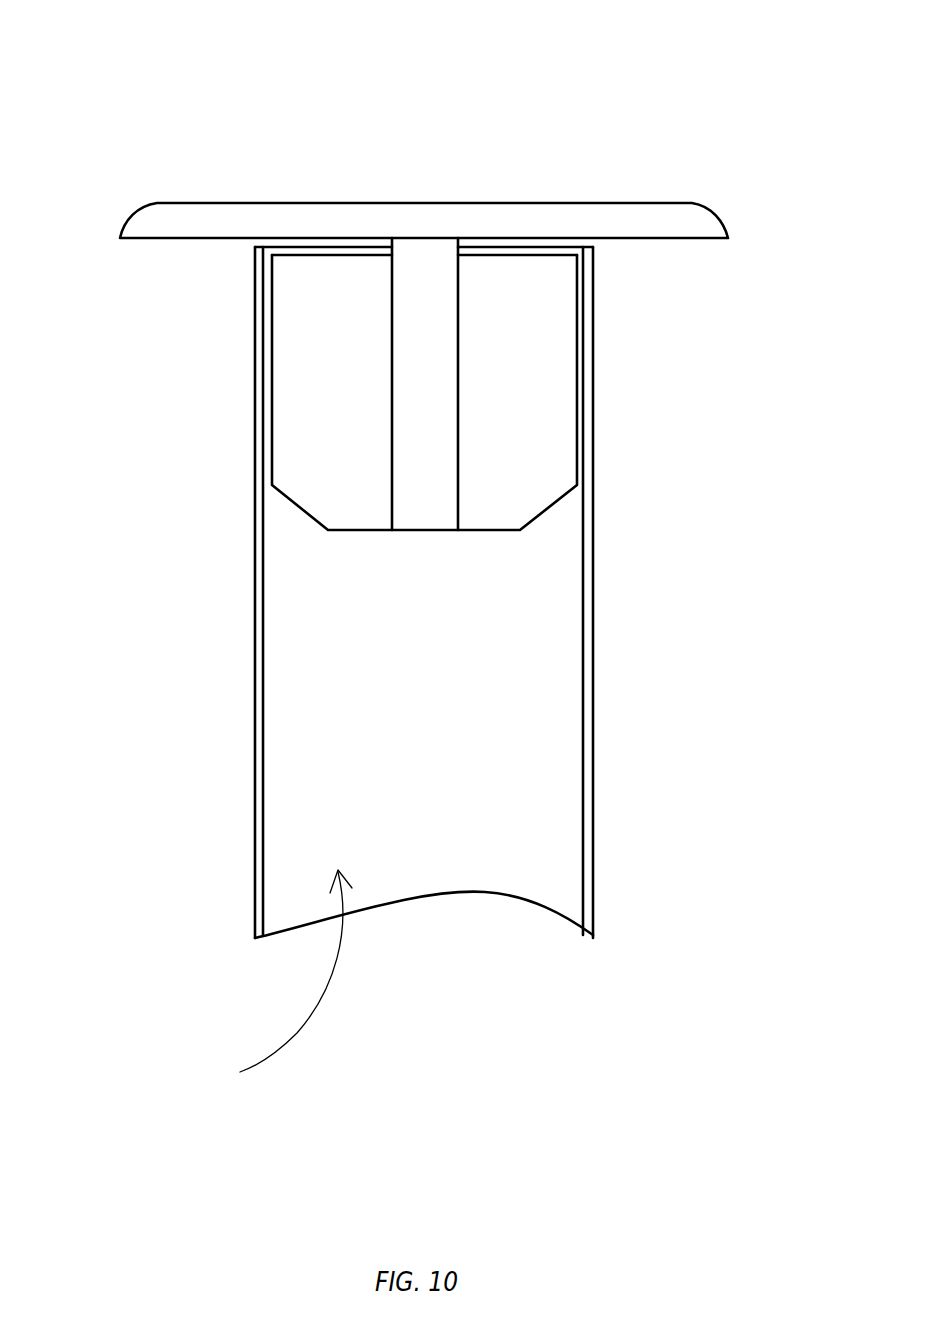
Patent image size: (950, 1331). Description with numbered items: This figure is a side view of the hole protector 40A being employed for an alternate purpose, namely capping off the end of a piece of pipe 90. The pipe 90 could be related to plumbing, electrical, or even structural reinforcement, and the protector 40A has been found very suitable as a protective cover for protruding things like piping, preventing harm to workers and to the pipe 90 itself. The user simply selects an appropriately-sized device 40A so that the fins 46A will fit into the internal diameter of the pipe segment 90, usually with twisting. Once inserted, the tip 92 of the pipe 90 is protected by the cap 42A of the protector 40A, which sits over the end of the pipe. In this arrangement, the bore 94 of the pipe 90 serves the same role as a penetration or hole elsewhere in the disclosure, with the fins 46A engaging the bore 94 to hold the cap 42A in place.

The hole protector 40A is at (717, 68).
The cap 42A is at (697, 222).
The fins 46A is at (292, 482).
The pipe 90 is at (595, 795).
The tip 92 is at (600, 245).
The bore 94 is at (274, 983).